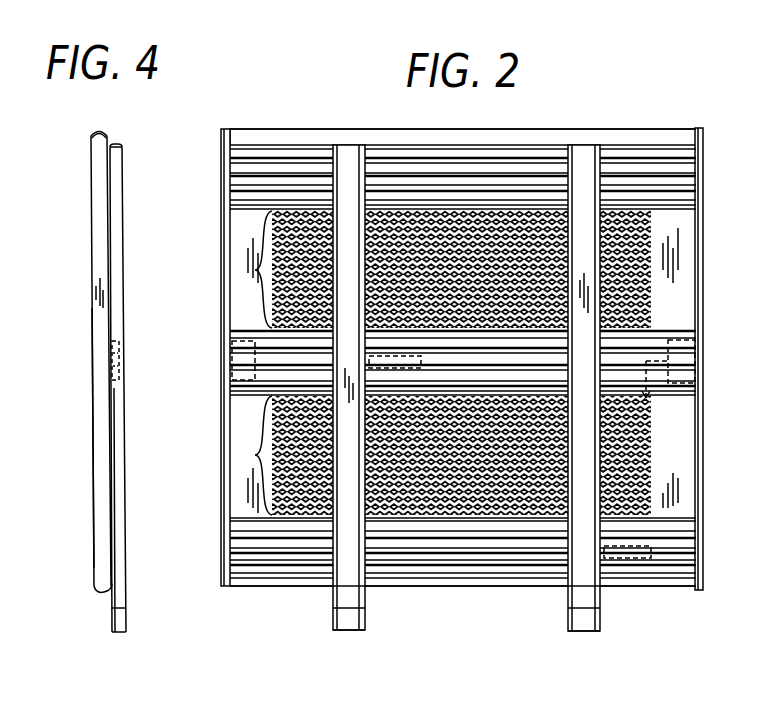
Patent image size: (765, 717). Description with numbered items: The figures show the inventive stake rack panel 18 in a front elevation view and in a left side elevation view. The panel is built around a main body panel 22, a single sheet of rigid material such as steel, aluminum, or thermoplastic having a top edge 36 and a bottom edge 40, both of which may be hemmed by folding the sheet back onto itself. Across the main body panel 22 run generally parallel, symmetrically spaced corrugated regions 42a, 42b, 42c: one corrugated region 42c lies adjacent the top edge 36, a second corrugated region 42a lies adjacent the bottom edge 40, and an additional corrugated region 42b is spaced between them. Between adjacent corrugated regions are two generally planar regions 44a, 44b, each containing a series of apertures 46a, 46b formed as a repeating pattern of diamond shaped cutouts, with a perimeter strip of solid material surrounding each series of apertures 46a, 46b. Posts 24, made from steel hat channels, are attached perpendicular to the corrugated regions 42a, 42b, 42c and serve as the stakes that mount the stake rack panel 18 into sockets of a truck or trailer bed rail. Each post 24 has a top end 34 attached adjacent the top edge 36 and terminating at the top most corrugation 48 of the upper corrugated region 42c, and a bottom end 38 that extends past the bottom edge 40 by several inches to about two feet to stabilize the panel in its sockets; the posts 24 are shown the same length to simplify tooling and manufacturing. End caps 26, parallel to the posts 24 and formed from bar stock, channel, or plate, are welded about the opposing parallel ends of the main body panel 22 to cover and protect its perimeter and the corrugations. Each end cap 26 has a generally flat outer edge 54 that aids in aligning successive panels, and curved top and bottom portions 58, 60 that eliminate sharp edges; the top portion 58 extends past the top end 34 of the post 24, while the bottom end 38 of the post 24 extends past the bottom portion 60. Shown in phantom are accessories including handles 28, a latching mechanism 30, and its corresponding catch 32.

In FIG. 4, the stake rack panel 18 is at (117, 652).
In FIG. 2, the stake rack panel 18 is at (325, 85).
In FIG. 2, the main body panel 22 is at (612, 128).
In FIG. 4, the posts 24 is at (112, 232).
In FIG. 2, the posts 24 is at (327, 606).
In FIG. 4, the end caps 26 is at (90, 200).
In FIG. 2, the end caps 26 is at (218, 536).
In FIG. 2, the handles 28 is at (640, 550).
In FIG. 2, the latching mechanism 30 is at (682, 342).
In FIG. 4, the catch 32 is at (110, 345).
In FIG. 2, the catch 32 is at (235, 358).
In FIG. 4, the top end 34 is at (110, 146).
In FIG. 2, the top end 34 is at (339, 146).
In FIG. 2, the top edge 36 is at (236, 121).
In FIG. 4, the bottom end 38 is at (114, 608).
In FIG. 2, the bottom end 38 is at (357, 602).
In FIG. 2, the bottom edge 40 is at (455, 584).
In FIG. 2, the corrugated region 42a is at (683, 551).
In FIG. 2, the corrugated region 42b is at (675, 330).
In FIG. 2, the corrugated region 42c is at (683, 158).
In FIG. 2, the planar region 44a is at (672, 440).
In FIG. 2, the planar region 44b is at (675, 243).
In FIG. 2, the series of apertures 46a is at (247, 447).
In FIG. 2, the series of apertures 46b is at (247, 262).
In FIG. 2, the top most corrugation 48 is at (645, 152).
In FIG. 4, the outer edge 54 is at (88, 400).
In FIG. 4, the top portion 58 is at (88, 126).
In FIG. 4, the bottom portion 60 is at (92, 585).